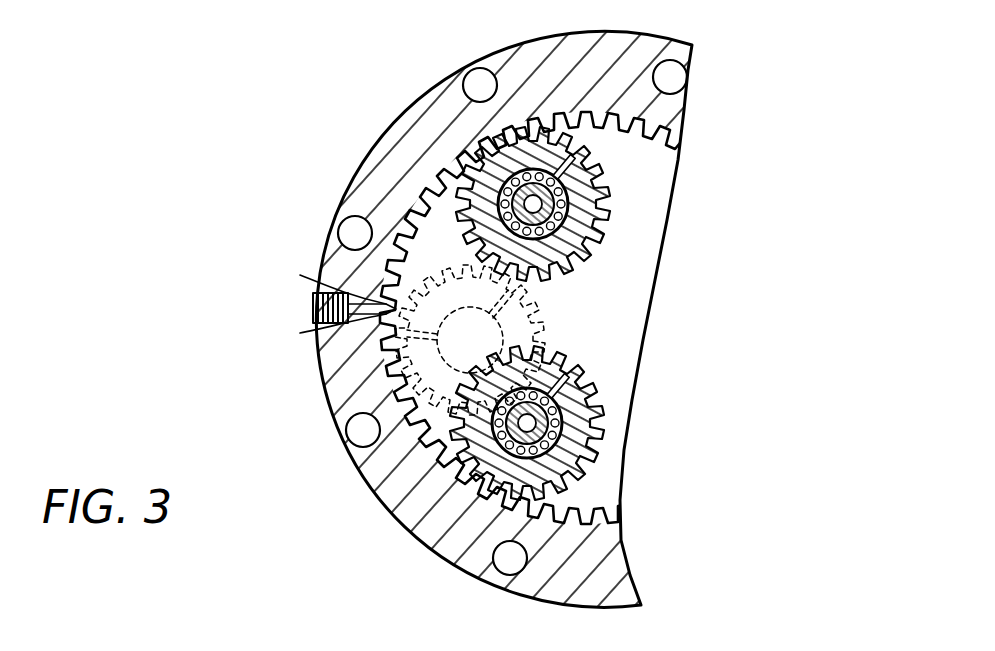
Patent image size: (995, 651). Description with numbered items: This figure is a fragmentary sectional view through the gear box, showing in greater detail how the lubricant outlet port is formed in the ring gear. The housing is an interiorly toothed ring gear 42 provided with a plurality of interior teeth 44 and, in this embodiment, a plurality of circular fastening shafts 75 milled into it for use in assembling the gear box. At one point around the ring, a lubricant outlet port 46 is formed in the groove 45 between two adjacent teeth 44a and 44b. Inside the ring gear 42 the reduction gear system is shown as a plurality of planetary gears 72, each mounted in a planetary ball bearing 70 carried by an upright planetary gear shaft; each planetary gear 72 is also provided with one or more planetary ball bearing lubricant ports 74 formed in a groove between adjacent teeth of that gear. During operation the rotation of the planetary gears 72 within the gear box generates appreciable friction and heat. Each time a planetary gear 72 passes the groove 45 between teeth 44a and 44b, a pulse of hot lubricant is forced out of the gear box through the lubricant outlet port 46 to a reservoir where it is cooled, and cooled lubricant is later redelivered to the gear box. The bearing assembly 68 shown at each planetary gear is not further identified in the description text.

The ring gear 42 is at (397, 133).
The interior teeth 44 is at (592, 514).
The tooth 44a is at (388, 303).
The tooth 44b is at (385, 316).
The groove 45 is at (362, 312).
The lubricant outlet port 46 is at (314, 300).
The bearing 68 is at (563, 419).
The planetary ball bearings 70 is at (563, 436).
The planetary gears 72 is at (600, 201).
The planetary ball bearing lubricant ports 74 is at (569, 373).
The circular fastening shafts 75 is at (352, 432).